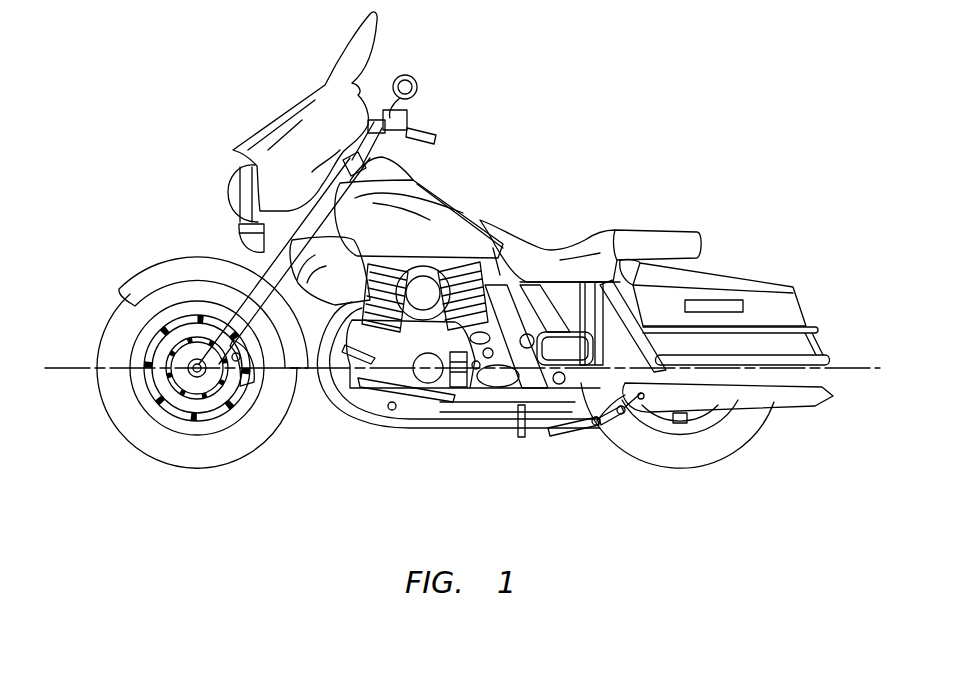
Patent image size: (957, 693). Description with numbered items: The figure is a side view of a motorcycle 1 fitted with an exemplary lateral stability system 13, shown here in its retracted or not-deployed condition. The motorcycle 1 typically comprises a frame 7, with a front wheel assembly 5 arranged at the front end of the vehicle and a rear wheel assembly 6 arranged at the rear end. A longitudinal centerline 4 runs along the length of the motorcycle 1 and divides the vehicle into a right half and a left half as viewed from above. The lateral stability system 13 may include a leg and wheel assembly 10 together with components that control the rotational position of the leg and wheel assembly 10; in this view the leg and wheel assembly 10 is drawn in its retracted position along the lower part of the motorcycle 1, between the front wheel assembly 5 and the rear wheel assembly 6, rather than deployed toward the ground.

The motorcycle 1 is at (175, 80).
The longitudinal centerline 4 is at (63, 368).
The front wheel assembly 5 is at (145, 477).
The rear wheel assembly 6 is at (747, 469).
The frame 7 is at (357, 430).
The leg and wheel assembly 10 is at (578, 452).
The lateral stability system 13 is at (586, 128).